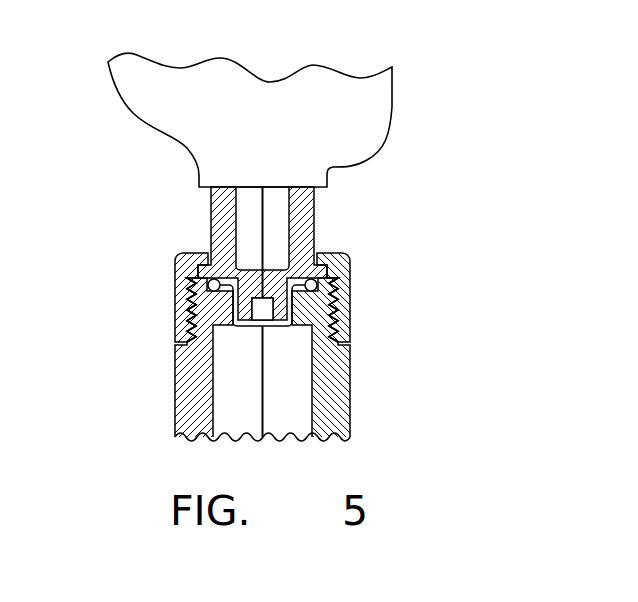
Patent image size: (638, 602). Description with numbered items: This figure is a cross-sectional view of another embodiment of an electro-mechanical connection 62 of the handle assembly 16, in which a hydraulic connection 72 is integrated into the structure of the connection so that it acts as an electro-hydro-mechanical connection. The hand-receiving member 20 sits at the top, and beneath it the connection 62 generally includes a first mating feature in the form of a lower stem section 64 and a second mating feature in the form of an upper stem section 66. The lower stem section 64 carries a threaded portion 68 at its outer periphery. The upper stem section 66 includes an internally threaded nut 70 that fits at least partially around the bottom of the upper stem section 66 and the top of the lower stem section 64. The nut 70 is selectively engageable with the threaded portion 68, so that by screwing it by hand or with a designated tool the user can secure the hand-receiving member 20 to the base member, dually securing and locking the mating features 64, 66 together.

The handle assembly 16 is at (438, 119).
The hand-receiving member 20 is at (331, 75).
The electro-mechanical connection 62 is at (372, 285).
The lower stem section 64 is at (349, 373).
The upper stem section 66 is at (313, 222).
The threaded portion 68 is at (176, 313).
The internally threaded nut 70 is at (177, 258).
The hydraulic connection 72 is at (284, 342).